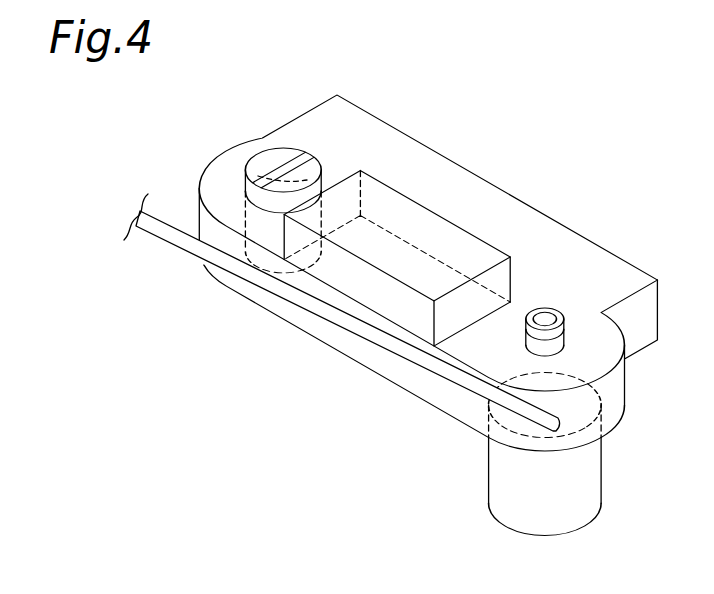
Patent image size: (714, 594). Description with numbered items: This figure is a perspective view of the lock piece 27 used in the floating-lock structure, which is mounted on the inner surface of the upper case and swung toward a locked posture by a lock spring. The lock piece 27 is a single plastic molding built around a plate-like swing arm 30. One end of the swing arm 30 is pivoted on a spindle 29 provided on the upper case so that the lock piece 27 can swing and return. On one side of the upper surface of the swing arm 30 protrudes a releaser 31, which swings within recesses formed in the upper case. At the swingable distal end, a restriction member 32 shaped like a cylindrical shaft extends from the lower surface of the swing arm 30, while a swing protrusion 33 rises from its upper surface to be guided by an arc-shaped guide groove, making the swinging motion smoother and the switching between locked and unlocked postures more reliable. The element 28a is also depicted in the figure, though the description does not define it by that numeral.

The lock piece 27 is at (404, 316).
The rod 28a is at (180, 242).
The spindle 29 is at (288, 163).
The swing arm 30 is at (503, 212).
The releaser 31 is at (402, 210).
The restriction member 32 is at (512, 482).
The swing protrusion 33 is at (542, 307).